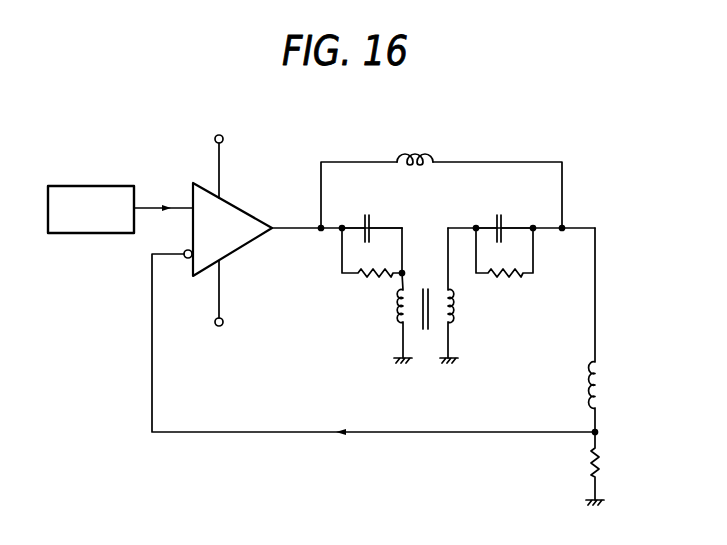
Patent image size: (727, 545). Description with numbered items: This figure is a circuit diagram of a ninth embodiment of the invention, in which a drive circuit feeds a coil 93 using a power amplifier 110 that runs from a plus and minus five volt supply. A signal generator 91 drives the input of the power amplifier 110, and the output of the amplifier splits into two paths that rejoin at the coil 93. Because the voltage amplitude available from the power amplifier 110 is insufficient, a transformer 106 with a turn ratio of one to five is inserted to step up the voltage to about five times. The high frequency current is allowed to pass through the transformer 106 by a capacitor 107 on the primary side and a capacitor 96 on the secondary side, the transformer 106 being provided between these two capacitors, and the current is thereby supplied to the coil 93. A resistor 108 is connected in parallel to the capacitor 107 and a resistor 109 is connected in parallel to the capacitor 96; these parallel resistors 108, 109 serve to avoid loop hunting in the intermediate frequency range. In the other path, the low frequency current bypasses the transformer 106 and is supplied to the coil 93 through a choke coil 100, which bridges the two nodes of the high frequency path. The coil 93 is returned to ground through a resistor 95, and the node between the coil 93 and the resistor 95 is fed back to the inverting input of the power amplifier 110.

The signal generator 91 is at (92, 186).
The power amplifier 110 is at (244, 209).
The choke coil 100 is at (418, 157).
The capacitor 107 is at (366, 213).
The resistor 108 is at (367, 277).
The transformer 106 is at (426, 335).
The capacitor 96 is at (500, 213).
The resistor 109 is at (503, 278).
The coil 93 is at (602, 381).
The resistor 95 is at (602, 462).